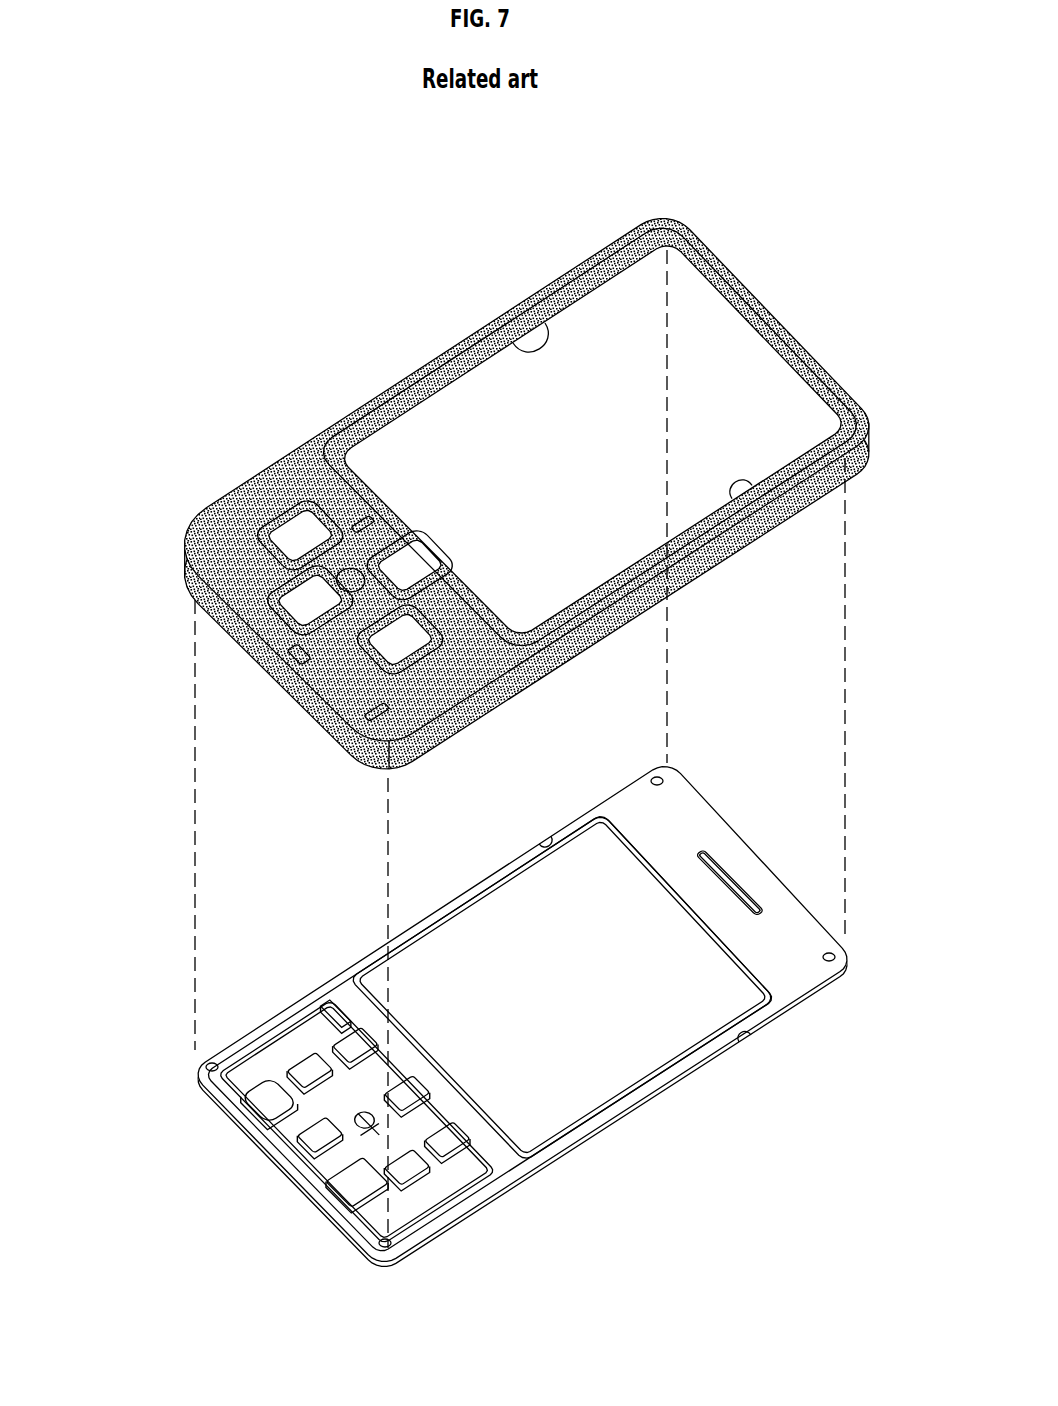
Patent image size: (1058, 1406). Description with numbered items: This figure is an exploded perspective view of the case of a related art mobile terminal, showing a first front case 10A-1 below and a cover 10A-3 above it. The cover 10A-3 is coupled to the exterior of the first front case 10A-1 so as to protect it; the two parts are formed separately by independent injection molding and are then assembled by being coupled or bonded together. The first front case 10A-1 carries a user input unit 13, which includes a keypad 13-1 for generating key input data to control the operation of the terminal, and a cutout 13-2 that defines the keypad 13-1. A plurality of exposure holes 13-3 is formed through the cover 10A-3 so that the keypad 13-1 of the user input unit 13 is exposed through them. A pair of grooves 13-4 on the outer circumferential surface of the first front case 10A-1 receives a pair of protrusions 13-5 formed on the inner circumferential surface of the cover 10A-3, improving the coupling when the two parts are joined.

The user input unit 13 is at (473, 737).
The cover 10A-3 is at (488, 466).
The first front case 10A-1 is at (504, 1035).
The keypad 13-1 is at (356, 1185).
The cutout 13-2 is at (269, 1103).
The exposure holes 13-3 is at (236, 506).
The grooves 13-4 is at (543, 837).
The protrusions 13-5 is at (501, 334).